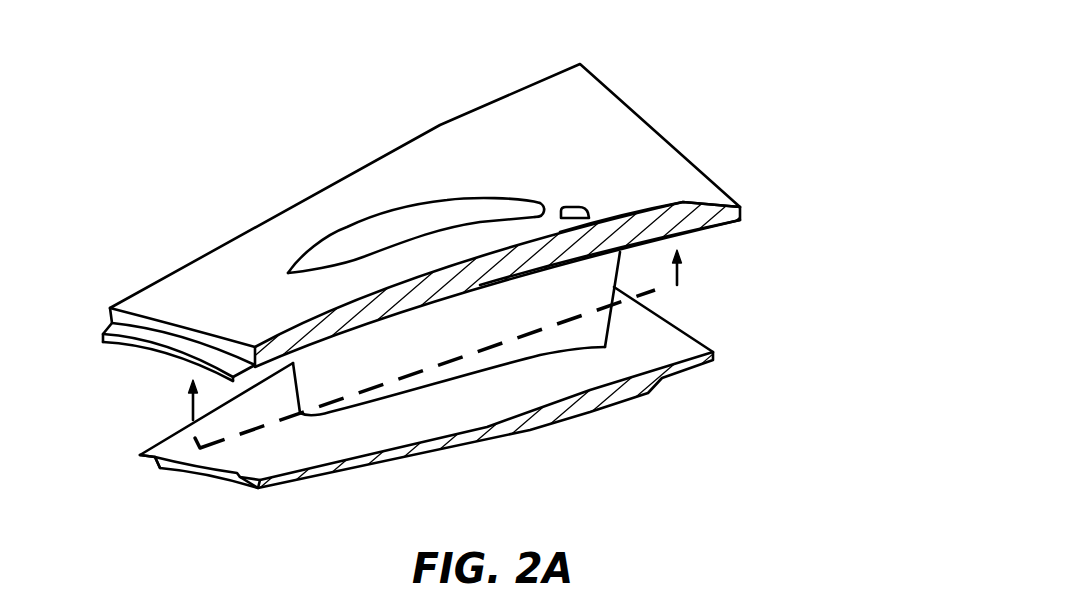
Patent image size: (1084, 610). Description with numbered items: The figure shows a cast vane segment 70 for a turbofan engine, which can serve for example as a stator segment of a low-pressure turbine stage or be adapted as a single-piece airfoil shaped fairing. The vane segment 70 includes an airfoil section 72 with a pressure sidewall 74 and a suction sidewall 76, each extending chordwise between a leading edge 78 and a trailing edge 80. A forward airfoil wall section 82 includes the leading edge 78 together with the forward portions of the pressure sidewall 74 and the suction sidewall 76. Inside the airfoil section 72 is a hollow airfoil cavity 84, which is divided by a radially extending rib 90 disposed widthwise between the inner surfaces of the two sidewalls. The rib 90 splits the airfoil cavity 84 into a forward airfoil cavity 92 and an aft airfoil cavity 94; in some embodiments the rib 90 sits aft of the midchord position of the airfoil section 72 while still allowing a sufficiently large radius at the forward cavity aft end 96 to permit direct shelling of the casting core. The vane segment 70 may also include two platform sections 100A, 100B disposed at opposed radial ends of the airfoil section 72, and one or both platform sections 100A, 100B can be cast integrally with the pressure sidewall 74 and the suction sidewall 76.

The cast vane segment 70 is at (716, 104).
The airfoil section 72 is at (520, 352).
The pressure sidewall 74 is at (358, 402).
The suction sidewall 76 is at (722, 276).
The leading edge 78 is at (293, 363).
The trailing edge 80 is at (613, 302).
The forward airfoil wall section 82 is at (276, 386).
The airfoil cavity 84 is at (357, 232).
The rib 90 is at (550, 207).
The forward airfoil cavity 92 is at (310, 237).
The aft airfoil cavity 94 is at (600, 212).
The forward cavity aft end 96 is at (543, 213).
The vane platform section 100A is at (170, 267).
The vane platform section 100B is at (722, 351).